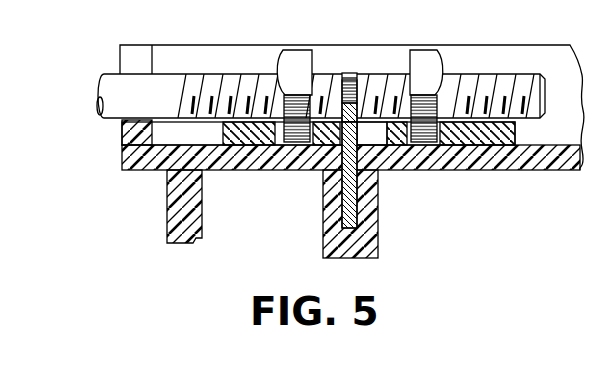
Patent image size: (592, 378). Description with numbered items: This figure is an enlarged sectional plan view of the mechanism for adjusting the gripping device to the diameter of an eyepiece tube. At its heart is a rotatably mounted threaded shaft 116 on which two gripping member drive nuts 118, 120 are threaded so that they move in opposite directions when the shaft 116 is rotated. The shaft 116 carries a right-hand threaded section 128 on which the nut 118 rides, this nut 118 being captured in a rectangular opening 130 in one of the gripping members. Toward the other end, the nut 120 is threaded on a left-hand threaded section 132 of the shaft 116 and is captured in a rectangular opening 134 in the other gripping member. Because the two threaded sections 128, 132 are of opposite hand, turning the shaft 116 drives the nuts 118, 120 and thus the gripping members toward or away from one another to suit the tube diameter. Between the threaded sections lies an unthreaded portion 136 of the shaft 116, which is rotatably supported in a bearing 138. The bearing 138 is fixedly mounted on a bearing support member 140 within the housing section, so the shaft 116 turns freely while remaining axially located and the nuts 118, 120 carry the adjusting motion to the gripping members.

The threaded shaft 116 is at (128, 107).
The gripping member drive nut 118 is at (428, 60).
The gripping member drive nut 120 is at (302, 56).
The right-hand threaded section 128 is at (490, 78).
The rectangular opening 130 is at (430, 155).
The left-hand threaded section 132 is at (208, 80).
The rectangular opening 134 is at (282, 142).
The unthreaded portion 136 is at (347, 73).
The bearing 138 is at (352, 187).
The bearing support member 140 is at (370, 240).